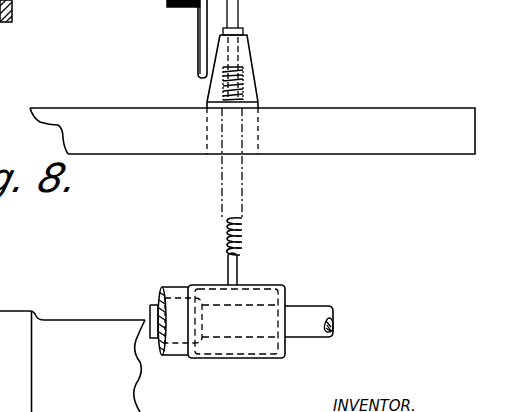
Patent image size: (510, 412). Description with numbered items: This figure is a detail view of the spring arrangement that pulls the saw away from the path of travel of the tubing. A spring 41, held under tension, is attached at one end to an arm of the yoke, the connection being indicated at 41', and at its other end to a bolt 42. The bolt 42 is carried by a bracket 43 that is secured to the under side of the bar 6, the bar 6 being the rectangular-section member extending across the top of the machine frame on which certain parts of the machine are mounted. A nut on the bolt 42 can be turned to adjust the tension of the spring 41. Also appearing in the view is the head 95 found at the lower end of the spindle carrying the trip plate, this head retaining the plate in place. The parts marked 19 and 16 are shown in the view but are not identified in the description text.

The lever handle 95 is at (168, 3).
The bolt 42 is at (240, 68).
The spring 43 is at (257, 93).
The bar 6 is at (252, 163).
The coil spring 41 is at (259, 226).
The rod 41' is at (264, 265).
The housing wall 19 is at (72, 361).
The housing 16 is at (16, 361).